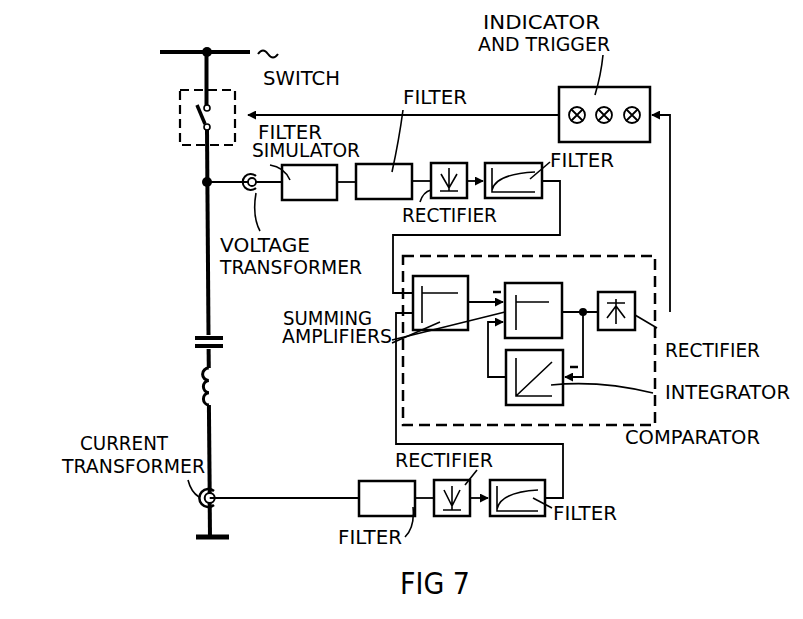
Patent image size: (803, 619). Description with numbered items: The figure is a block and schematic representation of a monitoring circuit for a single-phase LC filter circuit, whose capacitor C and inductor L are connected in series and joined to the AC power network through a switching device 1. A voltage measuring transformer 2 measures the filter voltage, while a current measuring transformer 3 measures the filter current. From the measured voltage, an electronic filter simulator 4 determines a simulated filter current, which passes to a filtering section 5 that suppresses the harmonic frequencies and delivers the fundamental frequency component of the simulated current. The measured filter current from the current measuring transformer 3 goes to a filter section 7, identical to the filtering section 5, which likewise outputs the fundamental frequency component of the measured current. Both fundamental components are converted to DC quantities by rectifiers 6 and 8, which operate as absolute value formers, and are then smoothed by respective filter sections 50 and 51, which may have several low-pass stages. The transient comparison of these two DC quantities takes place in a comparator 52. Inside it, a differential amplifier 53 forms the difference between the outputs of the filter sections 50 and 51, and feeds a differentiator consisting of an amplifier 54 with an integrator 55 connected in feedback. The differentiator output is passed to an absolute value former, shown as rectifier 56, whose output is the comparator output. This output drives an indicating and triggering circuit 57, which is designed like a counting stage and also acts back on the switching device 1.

The switching device 1 is at (225, 94).
The voltage measuring transformer 2 is at (254, 190).
The current measuring transformer 3 is at (213, 497).
The electronic filter simulator 4 is at (314, 202).
The filtering section 5 is at (389, 203).
The rectifier 6 is at (451, 161).
The filter section 7 is at (382, 480).
The rectifier 8 is at (462, 518).
The filter section 50 is at (518, 161).
The filter section 51 is at (512, 520).
The comparator 52 is at (594, 425).
The differential amplifier 53 is at (440, 330).
The amplifier 54 is at (551, 283).
The integrator 55 is at (563, 395).
The rectifier 56 is at (628, 330).
The indicating and triggering circuit 57 is at (625, 85).
The capacitor C is at (222, 335).
The inductor L is at (222, 388).